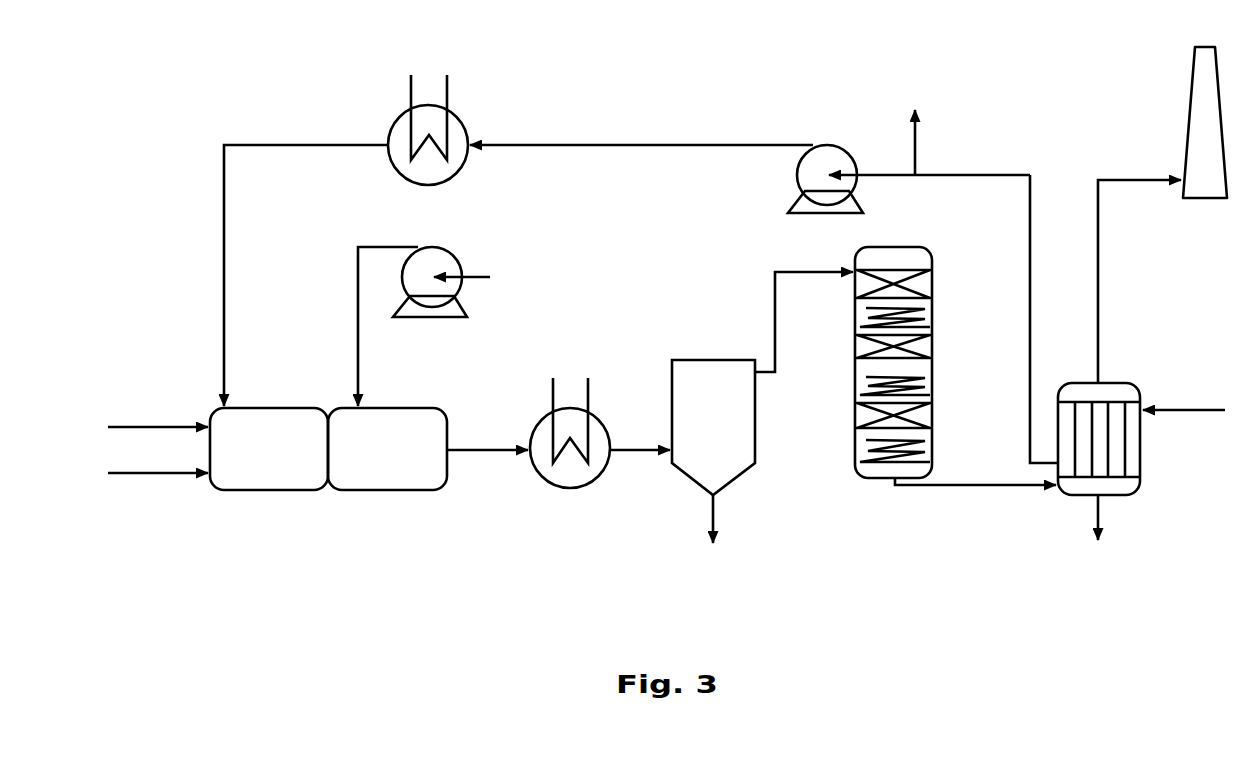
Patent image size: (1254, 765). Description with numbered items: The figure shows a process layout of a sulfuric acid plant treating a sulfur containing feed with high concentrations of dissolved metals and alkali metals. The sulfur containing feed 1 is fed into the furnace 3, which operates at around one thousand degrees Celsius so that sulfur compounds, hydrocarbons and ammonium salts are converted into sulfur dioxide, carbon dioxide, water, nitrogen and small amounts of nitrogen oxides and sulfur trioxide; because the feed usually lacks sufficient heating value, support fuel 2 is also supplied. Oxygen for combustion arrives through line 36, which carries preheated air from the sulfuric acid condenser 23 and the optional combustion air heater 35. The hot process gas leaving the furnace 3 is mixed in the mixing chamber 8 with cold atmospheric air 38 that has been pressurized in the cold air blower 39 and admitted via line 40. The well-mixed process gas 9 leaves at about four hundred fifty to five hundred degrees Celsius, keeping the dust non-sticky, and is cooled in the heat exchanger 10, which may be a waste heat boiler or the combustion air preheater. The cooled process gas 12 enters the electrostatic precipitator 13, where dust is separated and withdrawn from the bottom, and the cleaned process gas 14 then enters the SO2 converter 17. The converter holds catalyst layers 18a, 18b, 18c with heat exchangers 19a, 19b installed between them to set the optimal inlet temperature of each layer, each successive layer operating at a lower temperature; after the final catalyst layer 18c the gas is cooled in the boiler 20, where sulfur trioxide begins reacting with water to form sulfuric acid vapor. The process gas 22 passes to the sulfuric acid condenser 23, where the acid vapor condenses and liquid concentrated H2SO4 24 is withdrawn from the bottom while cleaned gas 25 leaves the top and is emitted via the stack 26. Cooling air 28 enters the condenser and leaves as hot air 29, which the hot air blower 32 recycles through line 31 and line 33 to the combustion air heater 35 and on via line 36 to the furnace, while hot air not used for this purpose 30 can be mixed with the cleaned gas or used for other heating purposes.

The sulfur containing feed 1 is at (158, 493).
The support fuel 2 is at (158, 409).
The furnace 3 is at (269, 449).
The mixing chamber 8 is at (387, 449).
The well-mixed process gas 9 is at (487, 477).
The heat exchanger 10 is at (570, 456).
The cooled stream 12 is at (640, 475).
The electrostatic precipitator 13 is at (713, 451).
The cleaned process gas 14 is at (794, 322).
The SO2 converter 17 is at (870, 376).
The catalyst layer 18a is at (925, 284).
The catalyst layer 18b is at (925, 346).
The final catalyst layer 18c is at (924, 412).
The heat exchanger 19a is at (927, 314).
The heat exchanger 19b is at (927, 380).
The boiler 20 is at (921, 448).
The process gas 22 is at (975, 502).
The sulfuric acid condenser 23 is at (1112, 423).
The liquid concentrated H2SO4 24 is at (1124, 520).
The cleaned gas 25 is at (1139, 281).
The stack 26 is at (1186, 122).
The cooling media 28 is at (1184, 430).
The hot air 29 is at (1027, 301).
The hot air not used 30 is at (915, 126).
The recycle line 31 is at (929, 156).
The hot air blower 32 is at (825, 160).
The recycle stream 33 is at (641, 123).
The combustion air heater 35 is at (428, 114).
The preheated combustion air line 36 is at (306, 275).
The cold atmospheric air 38 is at (482, 278).
The cold air blower 39 is at (430, 263).
The cold air line 40 is at (366, 326).